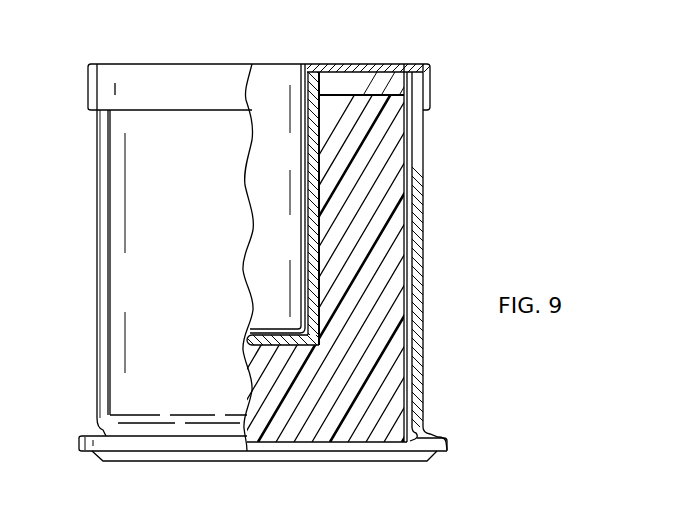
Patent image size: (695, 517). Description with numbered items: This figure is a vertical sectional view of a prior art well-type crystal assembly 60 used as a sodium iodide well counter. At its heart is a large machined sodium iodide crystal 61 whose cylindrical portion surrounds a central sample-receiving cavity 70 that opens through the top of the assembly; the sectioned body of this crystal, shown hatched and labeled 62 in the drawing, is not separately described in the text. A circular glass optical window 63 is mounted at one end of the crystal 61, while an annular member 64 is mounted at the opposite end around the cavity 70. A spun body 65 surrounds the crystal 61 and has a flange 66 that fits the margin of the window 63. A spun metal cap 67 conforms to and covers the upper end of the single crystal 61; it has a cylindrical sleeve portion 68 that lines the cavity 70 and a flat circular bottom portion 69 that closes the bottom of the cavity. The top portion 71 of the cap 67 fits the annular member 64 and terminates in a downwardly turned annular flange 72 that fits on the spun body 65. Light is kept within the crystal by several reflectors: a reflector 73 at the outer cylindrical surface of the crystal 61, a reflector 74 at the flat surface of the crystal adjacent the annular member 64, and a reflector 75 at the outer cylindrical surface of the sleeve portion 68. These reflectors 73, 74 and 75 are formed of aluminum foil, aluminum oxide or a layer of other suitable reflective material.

The well-type crystal assembly 60 is at (133, 40).
The sodium iodide crystal 61 is at (398, 360).
The core body 62 is at (398, 186).
The glass optical window 63 is at (333, 462).
The annular member 64 is at (396, 78).
The spun body 65 is at (100, 218).
The flange 66 is at (78, 446).
The spun metal cap 67 is at (232, 62).
The cylindrical sleeve portion 68 is at (312, 163).
The flat circular bottom portion 69 is at (264, 335).
The sample-receiving cavity 70 is at (281, 240).
The top portion 71 is at (410, 62).
The annular flange 72 is at (222, 100).
The reflector 73 is at (408, 273).
The reflector 74 is at (396, 110).
The reflector 75 is at (320, 248).